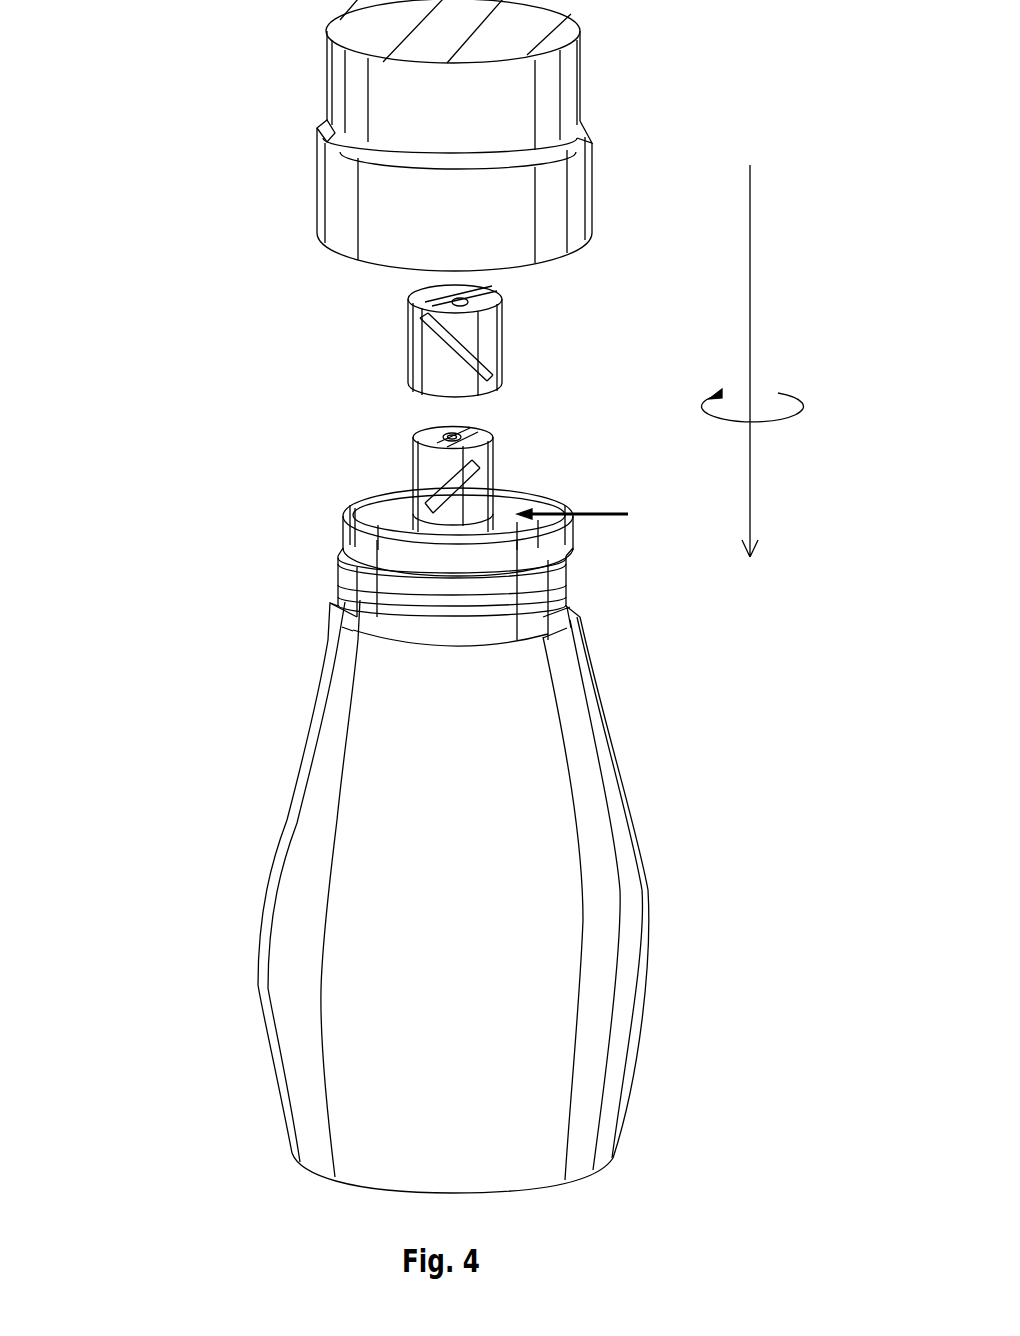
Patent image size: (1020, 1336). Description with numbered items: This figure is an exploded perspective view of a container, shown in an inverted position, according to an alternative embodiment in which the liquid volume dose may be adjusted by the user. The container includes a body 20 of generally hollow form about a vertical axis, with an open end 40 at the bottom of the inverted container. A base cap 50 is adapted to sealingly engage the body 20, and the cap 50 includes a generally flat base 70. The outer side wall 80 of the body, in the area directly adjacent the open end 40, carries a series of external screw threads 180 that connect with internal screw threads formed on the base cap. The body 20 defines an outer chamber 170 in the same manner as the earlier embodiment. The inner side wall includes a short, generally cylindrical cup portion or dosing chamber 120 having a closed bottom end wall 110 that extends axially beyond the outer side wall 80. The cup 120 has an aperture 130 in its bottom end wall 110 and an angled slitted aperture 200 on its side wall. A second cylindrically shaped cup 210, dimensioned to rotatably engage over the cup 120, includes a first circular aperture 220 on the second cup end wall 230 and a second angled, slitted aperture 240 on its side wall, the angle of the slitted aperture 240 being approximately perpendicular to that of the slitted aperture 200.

The body 20 is at (360, 935).
The open end 40 is at (660, 361).
The base cap 50 is at (375, 207).
The flat base 70 is at (510, 37).
The outer side wall 80 is at (623, 813).
The closed bottom end wall 110 is at (482, 428).
The cup portion or dosing chamber 120 is at (455, 465).
The aperture 130 is at (460, 435).
The outer chamber 170 is at (345, 505).
The external screw threads 180 is at (343, 583).
The angled slitted aperture 200 is at (438, 498).
The second cup 210 is at (435, 377).
The first circular aperture 220 is at (470, 293).
The second cup end wall 230 is at (490, 302).
The second angled slitted aperture 240 is at (420, 330).